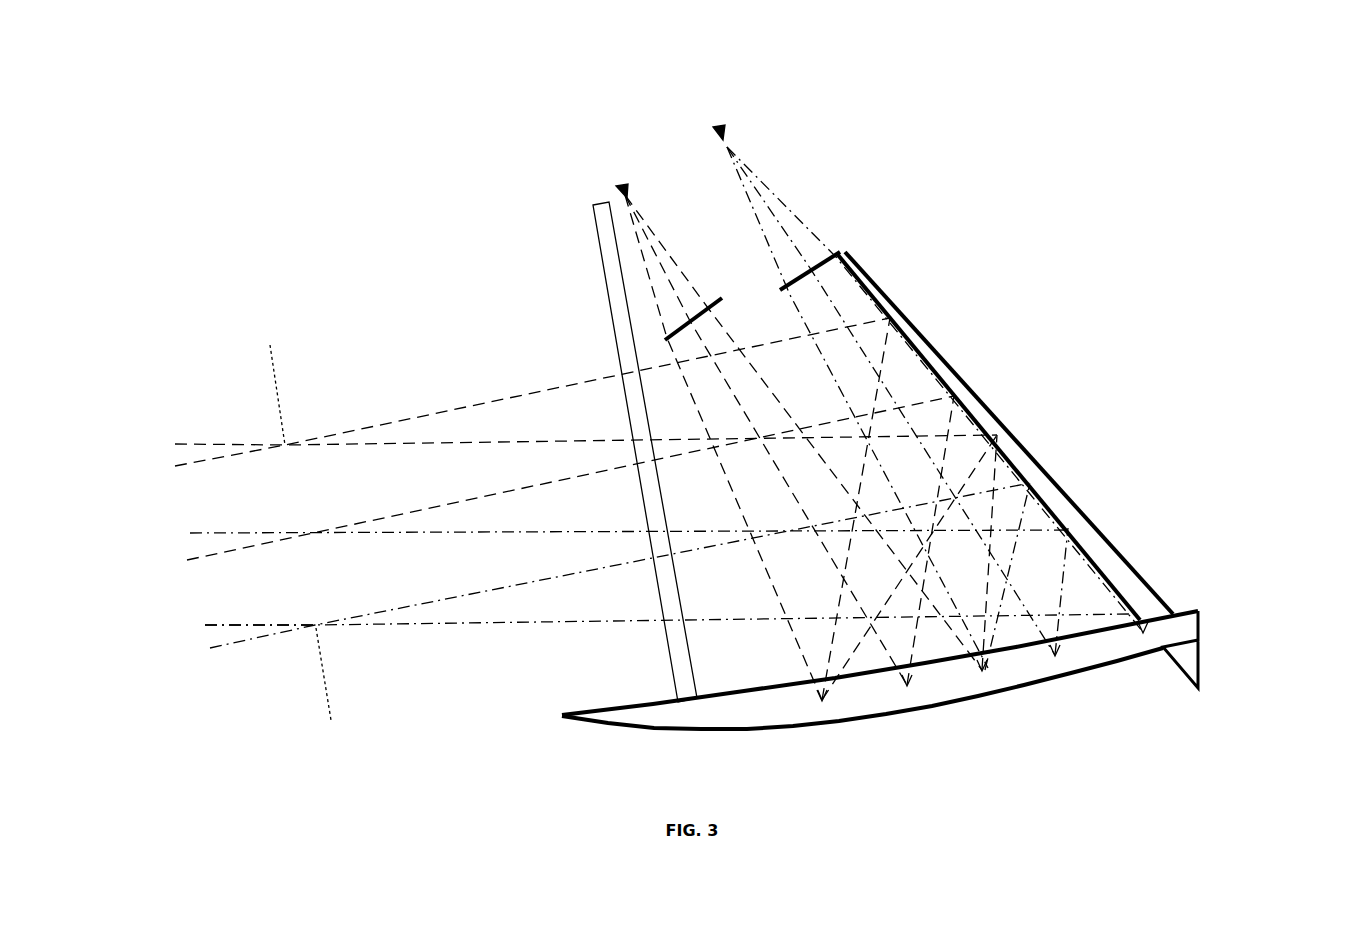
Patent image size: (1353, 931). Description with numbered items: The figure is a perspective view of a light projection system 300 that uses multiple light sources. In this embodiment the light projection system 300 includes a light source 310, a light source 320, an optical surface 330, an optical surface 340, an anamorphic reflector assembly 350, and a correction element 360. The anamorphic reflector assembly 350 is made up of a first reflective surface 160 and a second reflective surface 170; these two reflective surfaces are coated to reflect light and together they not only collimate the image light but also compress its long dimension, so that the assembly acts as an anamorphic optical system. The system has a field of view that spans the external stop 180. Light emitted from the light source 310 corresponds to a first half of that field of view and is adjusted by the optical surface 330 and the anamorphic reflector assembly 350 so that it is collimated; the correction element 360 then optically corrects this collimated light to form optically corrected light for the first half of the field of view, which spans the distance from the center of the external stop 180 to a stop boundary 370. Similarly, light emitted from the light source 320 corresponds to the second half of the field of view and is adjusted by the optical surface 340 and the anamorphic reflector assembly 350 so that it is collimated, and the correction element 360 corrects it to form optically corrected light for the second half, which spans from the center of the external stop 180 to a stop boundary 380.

The light projection system 300 is at (280, 85).
The light source 310 is at (620, 188).
The light source 320 is at (719, 130).
The optical surface 330 is at (712, 293).
The optical surface 340 is at (834, 254).
The second reflective surface 170 is at (1052, 477).
The first reflective surface 160 is at (1027, 660).
The anamorphic reflector assembly 350 is at (930, 523).
The correction element 360 is at (680, 665).
The stop boundary 370 is at (287, 443).
The stop boundary 380 is at (313, 628).
The external stop 180 is at (328, 690).